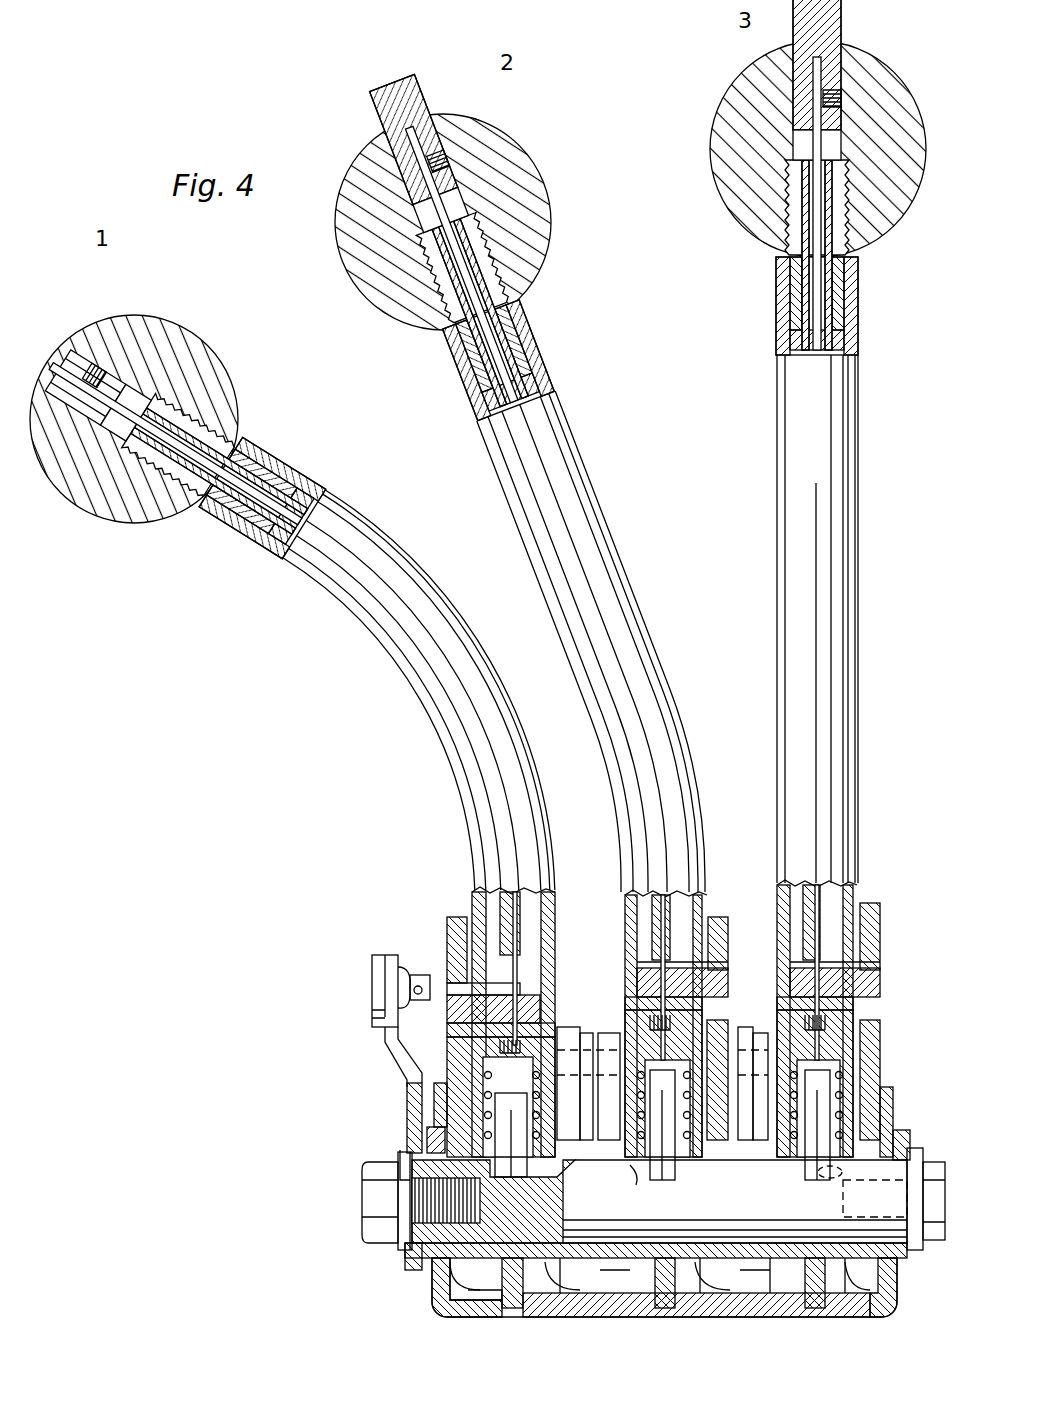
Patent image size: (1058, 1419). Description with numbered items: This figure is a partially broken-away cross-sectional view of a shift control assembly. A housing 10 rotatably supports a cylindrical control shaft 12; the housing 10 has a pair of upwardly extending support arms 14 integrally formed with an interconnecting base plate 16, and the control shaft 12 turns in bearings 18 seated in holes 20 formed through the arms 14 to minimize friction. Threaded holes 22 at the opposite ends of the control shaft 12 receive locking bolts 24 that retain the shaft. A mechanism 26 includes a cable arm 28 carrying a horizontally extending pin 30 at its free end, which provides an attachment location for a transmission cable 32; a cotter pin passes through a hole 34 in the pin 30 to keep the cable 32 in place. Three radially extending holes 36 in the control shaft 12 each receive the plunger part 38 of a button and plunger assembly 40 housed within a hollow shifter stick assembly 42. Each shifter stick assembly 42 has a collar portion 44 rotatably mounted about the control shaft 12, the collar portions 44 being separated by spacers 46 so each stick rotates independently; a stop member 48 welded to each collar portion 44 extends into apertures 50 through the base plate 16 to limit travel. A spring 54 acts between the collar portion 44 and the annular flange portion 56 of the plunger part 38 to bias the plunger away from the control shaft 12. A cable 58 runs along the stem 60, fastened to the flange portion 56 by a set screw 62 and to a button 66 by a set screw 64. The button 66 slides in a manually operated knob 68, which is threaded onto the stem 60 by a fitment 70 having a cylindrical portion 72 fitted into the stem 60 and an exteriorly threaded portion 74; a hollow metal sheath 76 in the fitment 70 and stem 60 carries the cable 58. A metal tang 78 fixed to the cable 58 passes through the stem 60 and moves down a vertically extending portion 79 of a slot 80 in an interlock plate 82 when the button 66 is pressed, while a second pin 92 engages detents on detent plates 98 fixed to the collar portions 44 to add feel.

The housing 10 is at (432, 1310).
The control shaft 12 is at (405, 1252).
The support arms 14 is at (400, 1165).
The base plate 16 is at (612, 1315).
The bearings 18 is at (412, 1258).
The holes 20 is at (398, 1188).
The threaded holes 22 is at (510, 1215).
The locking bolts 24 is at (362, 1200).
The mechanism 26 is at (372, 988).
The cable arm 28 is at (407, 1100).
The pin 30 is at (402, 965).
The transmission cable 32 is at (400, 1036).
The hole 34 is at (418, 975).
The radially extending holes 36 is at (527, 1160).
The plunger part 38 is at (527, 1150).
The button and plunger assembly 40 is at (510, 1040).
The shifter stick assembly 42 is at (348, 600).
The collar portion 44 is at (450, 1280).
The spacers 46 is at (560, 1290).
The stop member 48 is at (495, 1312).
The apertures 50 is at (515, 1310).
The spring 54 is at (440, 1135).
The annular flange portion 56 is at (470, 1085).
The cable 58 is at (470, 1030).
The stem 60 is at (362, 618).
The set screw 62 is at (500, 1030).
The set screw 64 is at (100, 375).
The button 66 is at (72, 355).
The knob 68 is at (150, 320).
The fitment 70 is at (238, 530).
The cylindrical portion 72 is at (250, 468).
The exteriorly threaded portion 74 is at (222, 418).
The metal sheath 76 is at (298, 500).
The tang 78 is at (447, 1000).
The vertically extending portion 79 is at (455, 983).
The slot 80 is at (458, 917).
The interlock plate 82 is at (475, 892).
The second pin 92 is at (631, 1185).
The detent plates 98 is at (605, 1033).